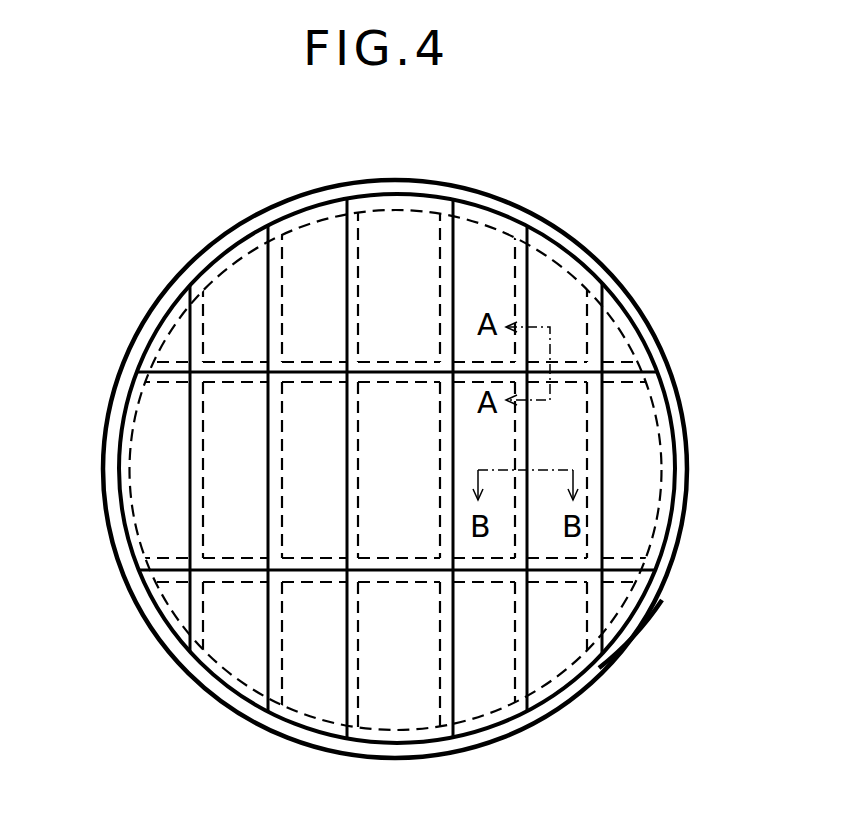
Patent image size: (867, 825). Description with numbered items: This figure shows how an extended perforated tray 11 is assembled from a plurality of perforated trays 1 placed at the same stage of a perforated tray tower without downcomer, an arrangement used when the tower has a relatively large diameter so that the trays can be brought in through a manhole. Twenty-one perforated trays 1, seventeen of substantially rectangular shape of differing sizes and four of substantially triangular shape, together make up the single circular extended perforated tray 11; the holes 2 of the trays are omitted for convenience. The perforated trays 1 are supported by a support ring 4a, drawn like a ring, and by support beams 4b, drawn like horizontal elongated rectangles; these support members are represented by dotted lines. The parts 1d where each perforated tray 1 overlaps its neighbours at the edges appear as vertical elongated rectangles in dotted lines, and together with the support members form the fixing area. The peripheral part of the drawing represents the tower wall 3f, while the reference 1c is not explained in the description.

The perforated tray 1 is at (642, 504).
The outer rim 1c is at (610, 640).
The overlap parts 1d is at (381, 195).
The holes 2 is at (367, 222).
The tower wall 3f is at (670, 403).
The support ring 4a is at (485, 220).
The support beams 4b is at (185, 355).
The extended perforated tray 11 is at (637, 313).